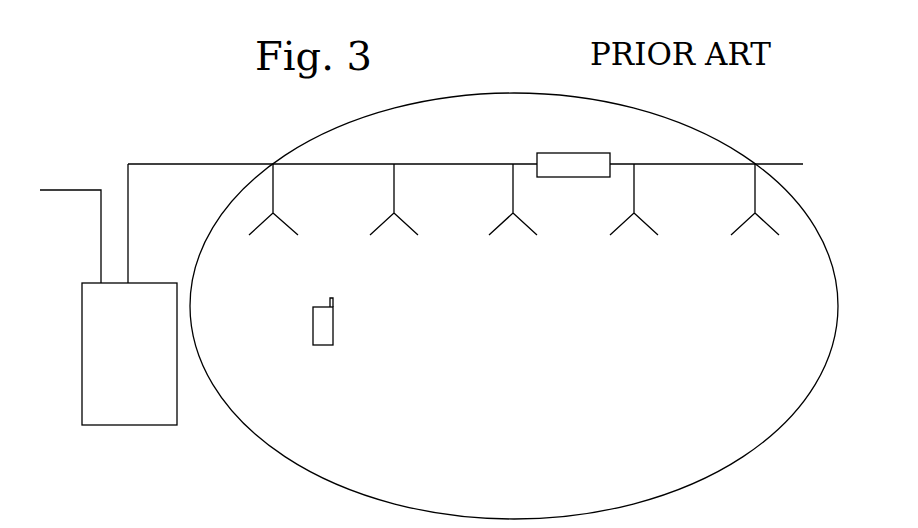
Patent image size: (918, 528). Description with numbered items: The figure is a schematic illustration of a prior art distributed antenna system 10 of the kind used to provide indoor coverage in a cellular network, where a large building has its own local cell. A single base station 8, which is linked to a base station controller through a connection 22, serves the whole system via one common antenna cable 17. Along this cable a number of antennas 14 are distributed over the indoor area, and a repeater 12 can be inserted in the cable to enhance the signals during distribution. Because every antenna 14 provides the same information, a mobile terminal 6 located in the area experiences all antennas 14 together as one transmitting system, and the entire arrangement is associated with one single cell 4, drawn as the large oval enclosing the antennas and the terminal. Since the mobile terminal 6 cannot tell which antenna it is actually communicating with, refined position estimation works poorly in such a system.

The prior art distributed antenna system 10 is at (181, 117).
The cell 4 is at (794, 407).
The common antenna cable 17 is at (231, 163).
The base station 8 is at (163, 403).
The connection 22 is at (65, 190).
The antennas 14 is at (267, 218).
The repeater 12 is at (594, 157).
The mobile terminal 6 is at (331, 325).